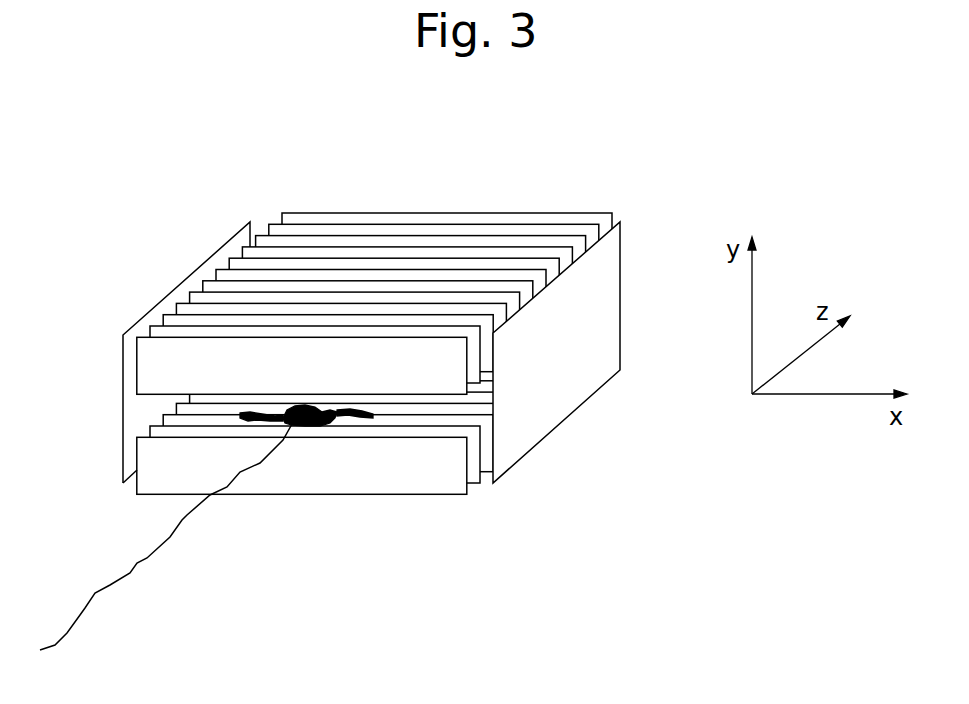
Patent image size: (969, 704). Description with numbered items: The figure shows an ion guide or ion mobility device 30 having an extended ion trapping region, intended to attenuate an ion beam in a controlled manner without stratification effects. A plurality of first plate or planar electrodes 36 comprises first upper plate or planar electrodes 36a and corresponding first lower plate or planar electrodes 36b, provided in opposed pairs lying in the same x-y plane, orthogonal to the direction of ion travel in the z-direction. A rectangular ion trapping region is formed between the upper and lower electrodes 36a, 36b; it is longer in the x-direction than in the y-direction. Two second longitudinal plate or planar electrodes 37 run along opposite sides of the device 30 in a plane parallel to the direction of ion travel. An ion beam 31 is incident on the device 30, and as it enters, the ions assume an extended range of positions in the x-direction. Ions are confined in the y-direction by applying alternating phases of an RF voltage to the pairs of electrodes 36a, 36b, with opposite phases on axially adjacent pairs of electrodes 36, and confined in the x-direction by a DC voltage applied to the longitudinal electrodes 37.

The ion guide or ion mobility device 30 is at (652, 160).
The first plate or planar electrodes 36 is at (433, 212).
The first upper plate or planar electrodes 36a is at (158, 373).
The first lower plate or planar electrodes 36b is at (162, 464).
The second longitudinal plate or planar electrodes 37 is at (183, 281).
The ion beam 31 is at (137, 563).